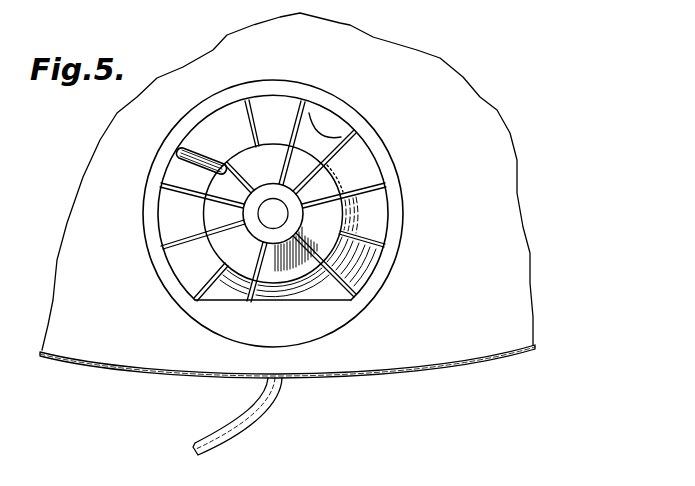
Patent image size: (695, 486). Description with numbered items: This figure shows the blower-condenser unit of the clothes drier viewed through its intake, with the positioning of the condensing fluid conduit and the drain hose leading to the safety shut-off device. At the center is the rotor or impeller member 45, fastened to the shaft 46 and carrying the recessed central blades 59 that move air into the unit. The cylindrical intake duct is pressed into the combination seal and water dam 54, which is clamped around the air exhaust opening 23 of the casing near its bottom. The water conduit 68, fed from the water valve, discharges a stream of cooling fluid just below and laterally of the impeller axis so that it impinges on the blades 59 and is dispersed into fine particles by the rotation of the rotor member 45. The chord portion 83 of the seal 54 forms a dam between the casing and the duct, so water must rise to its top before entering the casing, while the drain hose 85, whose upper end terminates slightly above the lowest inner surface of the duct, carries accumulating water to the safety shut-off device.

The air exhaust opening 23 is at (377, 208).
The rotor or impeller member 45 is at (355, 155).
The shaft 46 is at (281, 207).
The combination seal and water dam 54 is at (393, 264).
The blades 59 is at (308, 114).
The water conduit 68 is at (212, 166).
The chord portion 83 is at (287, 307).
The drain hose 85 is at (238, 435).